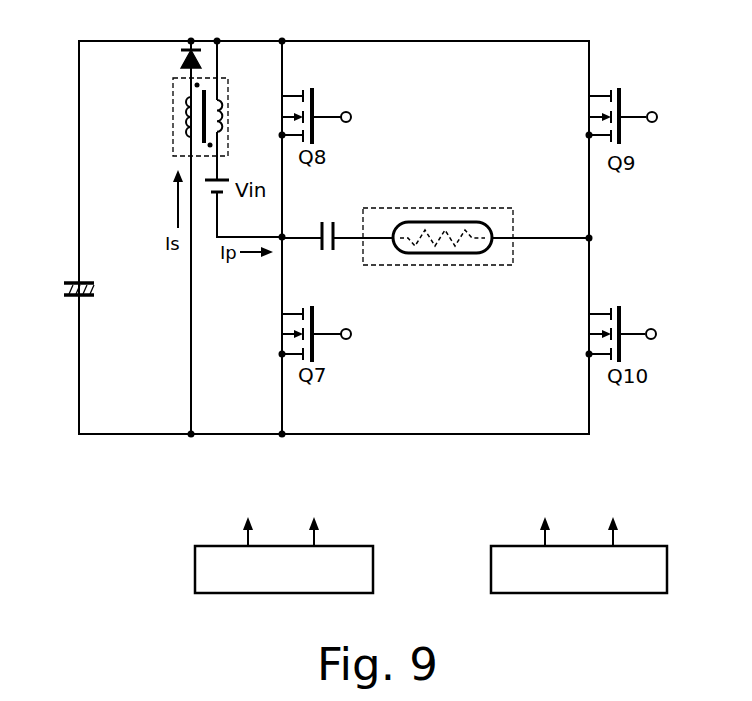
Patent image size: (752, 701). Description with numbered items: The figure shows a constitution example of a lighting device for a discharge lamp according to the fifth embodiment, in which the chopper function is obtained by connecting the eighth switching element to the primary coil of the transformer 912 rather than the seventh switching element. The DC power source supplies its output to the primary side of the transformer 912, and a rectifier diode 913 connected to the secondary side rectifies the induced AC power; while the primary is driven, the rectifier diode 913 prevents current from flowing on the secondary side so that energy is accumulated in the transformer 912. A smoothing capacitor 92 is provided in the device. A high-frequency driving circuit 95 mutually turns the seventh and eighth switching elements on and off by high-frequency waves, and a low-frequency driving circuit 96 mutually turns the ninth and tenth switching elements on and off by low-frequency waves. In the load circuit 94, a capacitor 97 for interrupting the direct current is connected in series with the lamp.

The rectifier diode 913 is at (178, 57).
The transformer 912 is at (173, 146).
The smoothing capacitor 92 is at (86, 283).
The capacitor 97 is at (327, 212).
The load circuit 94 is at (450, 208).
The high-frequency driving circuit 95 is at (357, 546).
The low-frequency driving circuit 96 is at (652, 546).